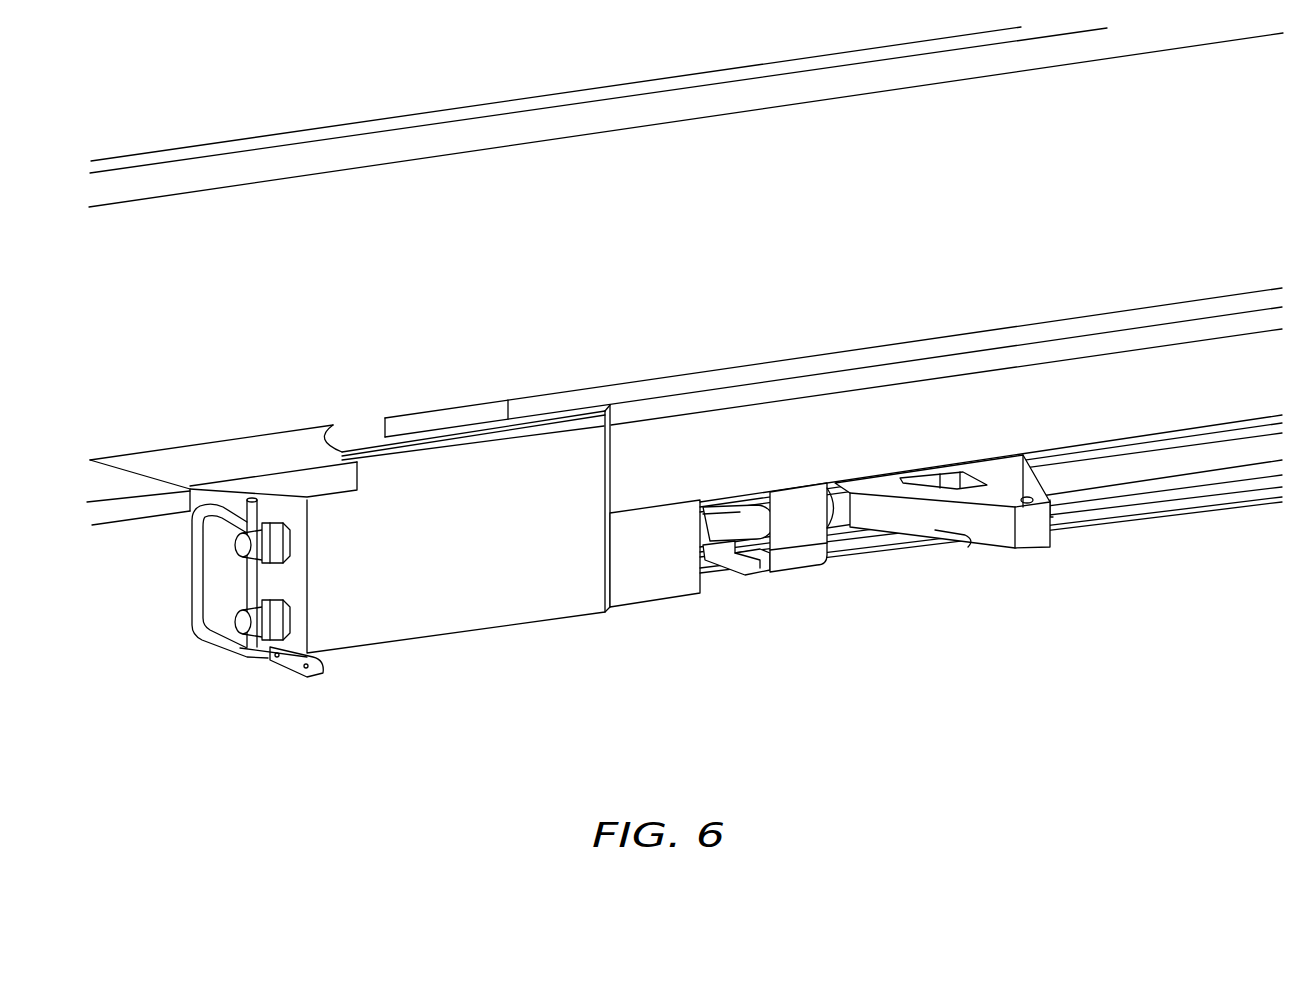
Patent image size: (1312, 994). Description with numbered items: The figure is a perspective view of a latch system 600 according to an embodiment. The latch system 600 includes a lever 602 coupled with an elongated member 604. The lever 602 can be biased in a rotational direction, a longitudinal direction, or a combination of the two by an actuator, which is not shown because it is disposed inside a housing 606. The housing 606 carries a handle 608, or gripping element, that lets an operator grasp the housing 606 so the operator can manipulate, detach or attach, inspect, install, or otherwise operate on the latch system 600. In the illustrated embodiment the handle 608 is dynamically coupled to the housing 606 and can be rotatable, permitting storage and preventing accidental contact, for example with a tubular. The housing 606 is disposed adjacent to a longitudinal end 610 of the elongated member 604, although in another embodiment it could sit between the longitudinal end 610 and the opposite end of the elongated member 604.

The latch system 600 is at (900, 581).
The lever 602 is at (1037, 548).
The elongated member 604 is at (716, 531).
The housing 606 is at (493, 517).
The handle 608 is at (193, 637).
The longitudinal end 610 is at (707, 526).